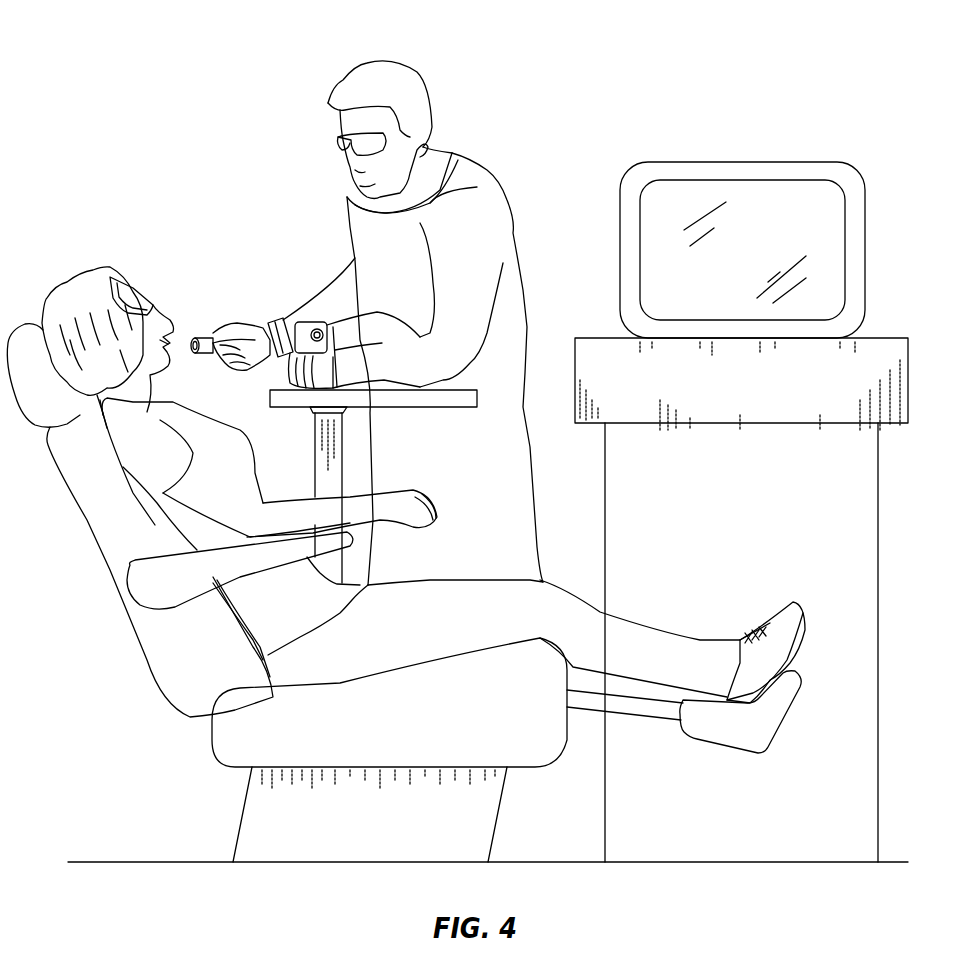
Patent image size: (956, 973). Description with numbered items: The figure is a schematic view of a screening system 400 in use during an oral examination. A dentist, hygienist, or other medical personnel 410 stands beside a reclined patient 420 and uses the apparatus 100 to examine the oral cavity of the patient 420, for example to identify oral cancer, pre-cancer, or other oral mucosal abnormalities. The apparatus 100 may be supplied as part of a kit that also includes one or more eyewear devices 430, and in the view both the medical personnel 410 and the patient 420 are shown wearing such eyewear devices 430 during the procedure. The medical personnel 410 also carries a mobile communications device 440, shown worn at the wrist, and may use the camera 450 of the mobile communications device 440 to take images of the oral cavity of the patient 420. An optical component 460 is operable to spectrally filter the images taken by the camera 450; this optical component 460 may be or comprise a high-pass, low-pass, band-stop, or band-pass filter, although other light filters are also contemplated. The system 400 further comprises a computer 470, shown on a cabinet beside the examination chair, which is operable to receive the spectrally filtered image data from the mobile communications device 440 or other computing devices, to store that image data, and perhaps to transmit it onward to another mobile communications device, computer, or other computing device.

The screening system 400 is at (130, 54).
The medical personnel 410 is at (440, 77).
The patient 420 is at (84, 258).
The eyewear devices 430 is at (152, 303).
The mobile communications device 440 is at (313, 328).
The camera 450 is at (313, 320).
The optical component 460 is at (347, 325).
The computer 470 is at (743, 162).
The apparatus 100 is at (208, 337).